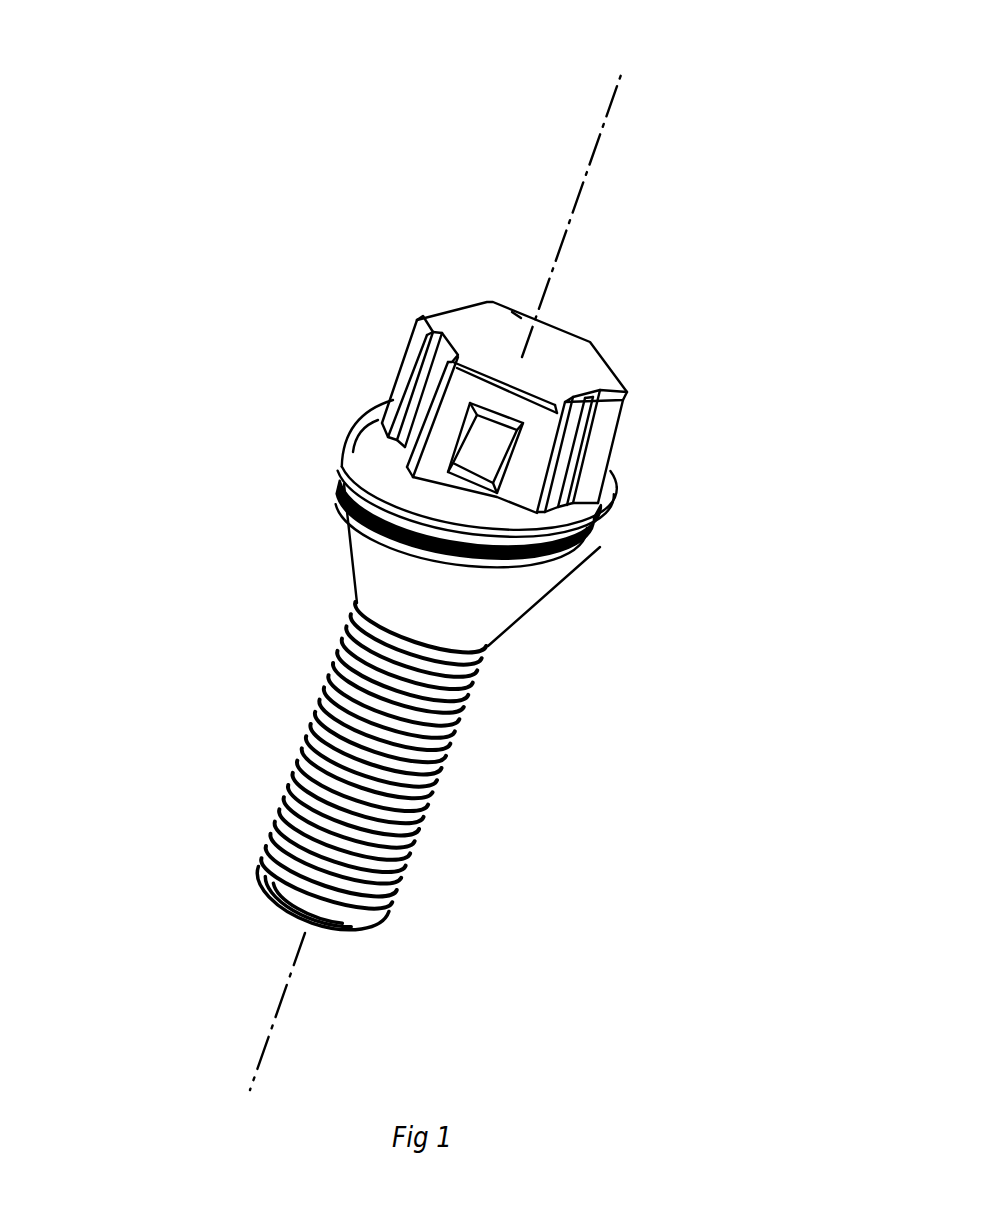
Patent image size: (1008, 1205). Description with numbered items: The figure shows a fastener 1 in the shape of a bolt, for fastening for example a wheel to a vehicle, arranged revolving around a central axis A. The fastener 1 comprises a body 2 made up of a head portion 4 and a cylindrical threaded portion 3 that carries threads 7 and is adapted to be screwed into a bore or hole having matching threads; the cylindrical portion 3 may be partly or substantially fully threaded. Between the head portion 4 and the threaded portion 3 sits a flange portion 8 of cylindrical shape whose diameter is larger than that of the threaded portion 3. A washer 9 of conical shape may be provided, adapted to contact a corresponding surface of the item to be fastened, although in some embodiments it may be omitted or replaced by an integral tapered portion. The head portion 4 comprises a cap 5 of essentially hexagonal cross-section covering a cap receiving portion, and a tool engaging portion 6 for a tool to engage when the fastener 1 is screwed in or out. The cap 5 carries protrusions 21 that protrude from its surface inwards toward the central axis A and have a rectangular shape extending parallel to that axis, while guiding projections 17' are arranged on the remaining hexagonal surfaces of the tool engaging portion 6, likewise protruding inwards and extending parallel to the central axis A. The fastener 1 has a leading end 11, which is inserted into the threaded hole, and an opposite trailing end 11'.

The fastener 1 is at (249, 153).
The body 2 is at (283, 563).
The threaded portion 3 is at (457, 775).
The head portion 4 is at (438, 302).
The cap 5 is at (576, 373).
The tool engaging portion 6 is at (388, 404).
The threads 7 is at (300, 750).
The flange portion 8 is at (351, 452).
The washer 9 is at (510, 598).
The leading end 11 is at (274, 915).
The trailing end 11' is at (602, 245).
The guiding projections 17' is at (536, 331).
The protrusions 21 is at (481, 460).
The central axis A is at (280, 1008).